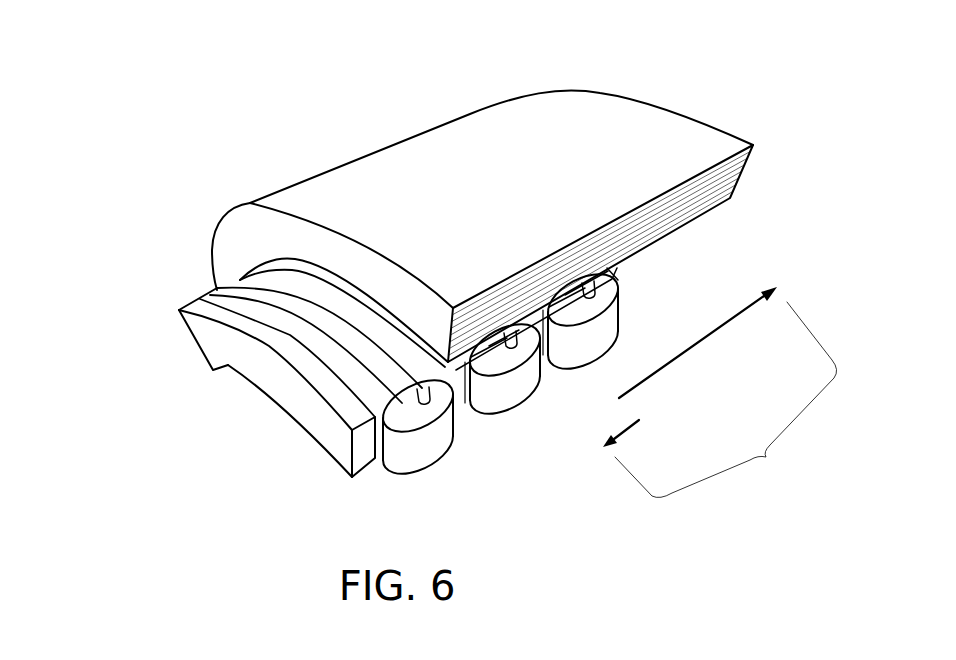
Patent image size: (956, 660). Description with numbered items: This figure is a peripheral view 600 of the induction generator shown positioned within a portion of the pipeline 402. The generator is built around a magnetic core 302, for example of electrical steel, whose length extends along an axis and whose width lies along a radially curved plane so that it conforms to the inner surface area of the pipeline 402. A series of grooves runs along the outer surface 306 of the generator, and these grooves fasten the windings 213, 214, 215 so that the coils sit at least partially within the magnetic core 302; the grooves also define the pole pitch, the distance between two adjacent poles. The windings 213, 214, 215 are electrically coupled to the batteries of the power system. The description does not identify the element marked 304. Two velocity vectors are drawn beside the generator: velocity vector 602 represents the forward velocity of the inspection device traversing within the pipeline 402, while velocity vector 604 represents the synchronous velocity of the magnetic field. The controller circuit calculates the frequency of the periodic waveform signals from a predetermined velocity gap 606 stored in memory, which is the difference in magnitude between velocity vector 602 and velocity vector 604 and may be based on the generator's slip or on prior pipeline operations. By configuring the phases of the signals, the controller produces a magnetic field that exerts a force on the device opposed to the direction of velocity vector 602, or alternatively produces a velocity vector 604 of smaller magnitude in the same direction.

The peripheral view 600 is at (143, 88).
The pipeline 402 is at (617, 94).
The outer surface 306 is at (181, 268).
The magnetic core 302 is at (200, 328).
The ribbon feed direction 304 is at (258, 444).
The winding 213 is at (418, 474).
The winding 214 is at (499, 418).
The winding 215 is at (622, 310).
The velocity vector 602 is at (737, 313).
The velocity vector 604 is at (618, 425).
The predetermined velocity gap 606 is at (726, 399).